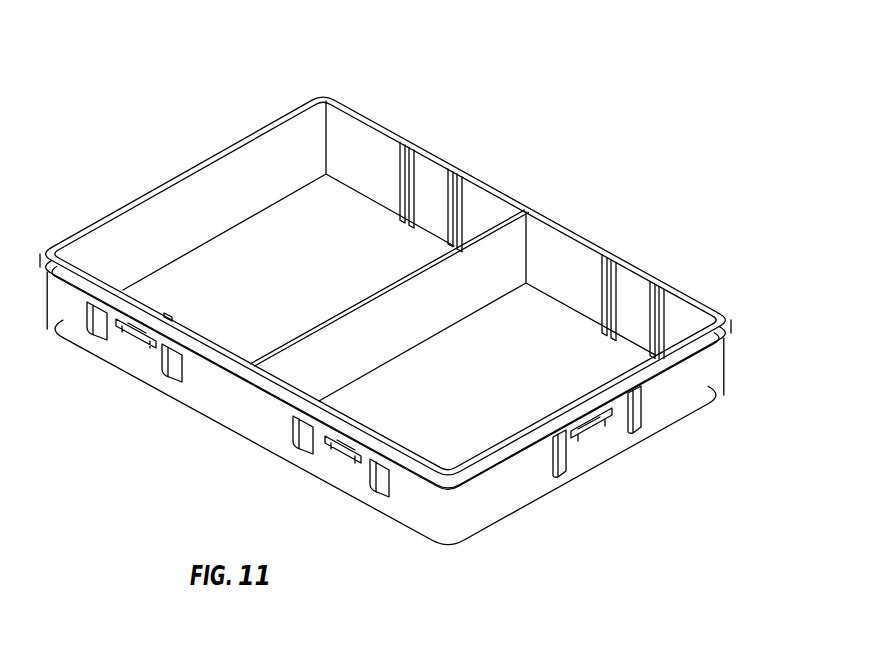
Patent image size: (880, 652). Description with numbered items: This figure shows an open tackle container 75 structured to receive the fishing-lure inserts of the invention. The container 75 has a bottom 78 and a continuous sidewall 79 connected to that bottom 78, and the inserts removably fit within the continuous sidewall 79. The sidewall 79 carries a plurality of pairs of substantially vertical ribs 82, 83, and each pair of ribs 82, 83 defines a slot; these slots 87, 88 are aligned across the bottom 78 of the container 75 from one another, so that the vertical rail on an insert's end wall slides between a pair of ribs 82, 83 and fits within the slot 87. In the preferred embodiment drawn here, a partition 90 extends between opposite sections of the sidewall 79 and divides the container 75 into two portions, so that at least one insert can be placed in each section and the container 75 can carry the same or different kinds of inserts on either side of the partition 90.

The container 75 is at (350, 103).
The bottom 78 is at (489, 385).
The continuous sidewall 79 is at (510, 498).
The substantially vertical rib 82 is at (402, 139).
The substantially vertical rib 83 is at (412, 139).
The slot 87 is at (460, 167).
The slot 88 is at (169, 315).
The partition 90 is at (414, 327).